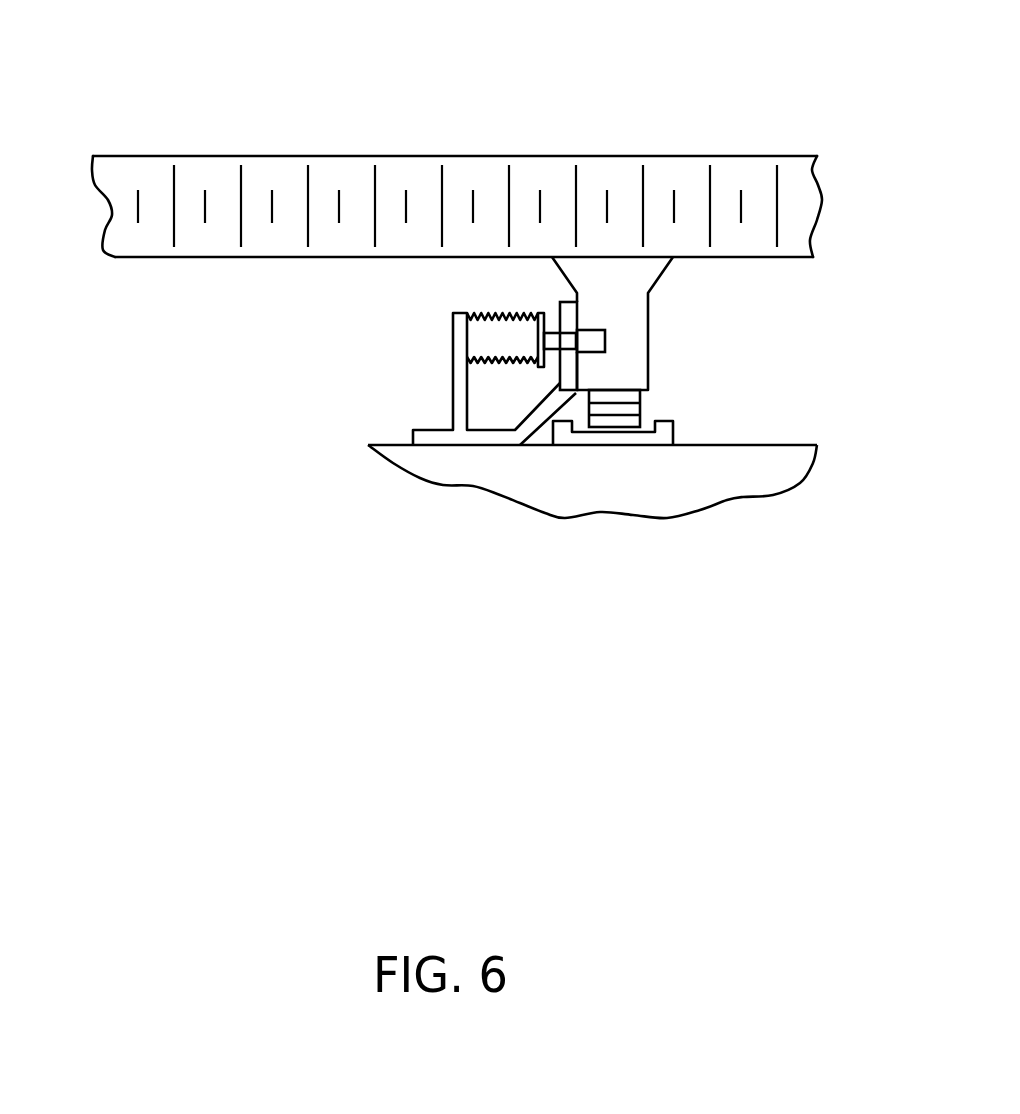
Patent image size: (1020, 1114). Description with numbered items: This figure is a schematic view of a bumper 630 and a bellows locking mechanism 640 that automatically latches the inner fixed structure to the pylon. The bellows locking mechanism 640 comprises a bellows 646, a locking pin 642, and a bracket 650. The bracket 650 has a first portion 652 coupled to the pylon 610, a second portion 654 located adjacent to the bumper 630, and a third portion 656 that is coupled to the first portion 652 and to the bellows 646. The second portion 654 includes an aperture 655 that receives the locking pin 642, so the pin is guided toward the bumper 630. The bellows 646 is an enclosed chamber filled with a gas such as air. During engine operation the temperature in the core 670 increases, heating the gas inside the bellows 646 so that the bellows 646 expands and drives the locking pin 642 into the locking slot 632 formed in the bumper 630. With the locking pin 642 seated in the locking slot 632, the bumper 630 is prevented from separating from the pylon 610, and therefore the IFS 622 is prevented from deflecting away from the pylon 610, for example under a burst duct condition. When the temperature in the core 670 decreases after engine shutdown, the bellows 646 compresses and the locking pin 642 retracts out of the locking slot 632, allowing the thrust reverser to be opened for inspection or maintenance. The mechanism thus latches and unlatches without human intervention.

The pylon 610 is at (730, 500).
The IFS 622 is at (667, 157).
The bumper 630 is at (648, 328).
The locking slot 632 is at (605, 334).
The bellows locking mechanism 640 is at (383, 360).
The locking pin 642 is at (578, 340).
The bellows 646 is at (507, 313).
The bracket 650 is at (543, 428).
The first portion 652 is at (440, 445).
The second portion 654 is at (567, 302).
The aperture 655 is at (563, 364).
The third portion 656 is at (455, 403).
The core 670 is at (254, 355).